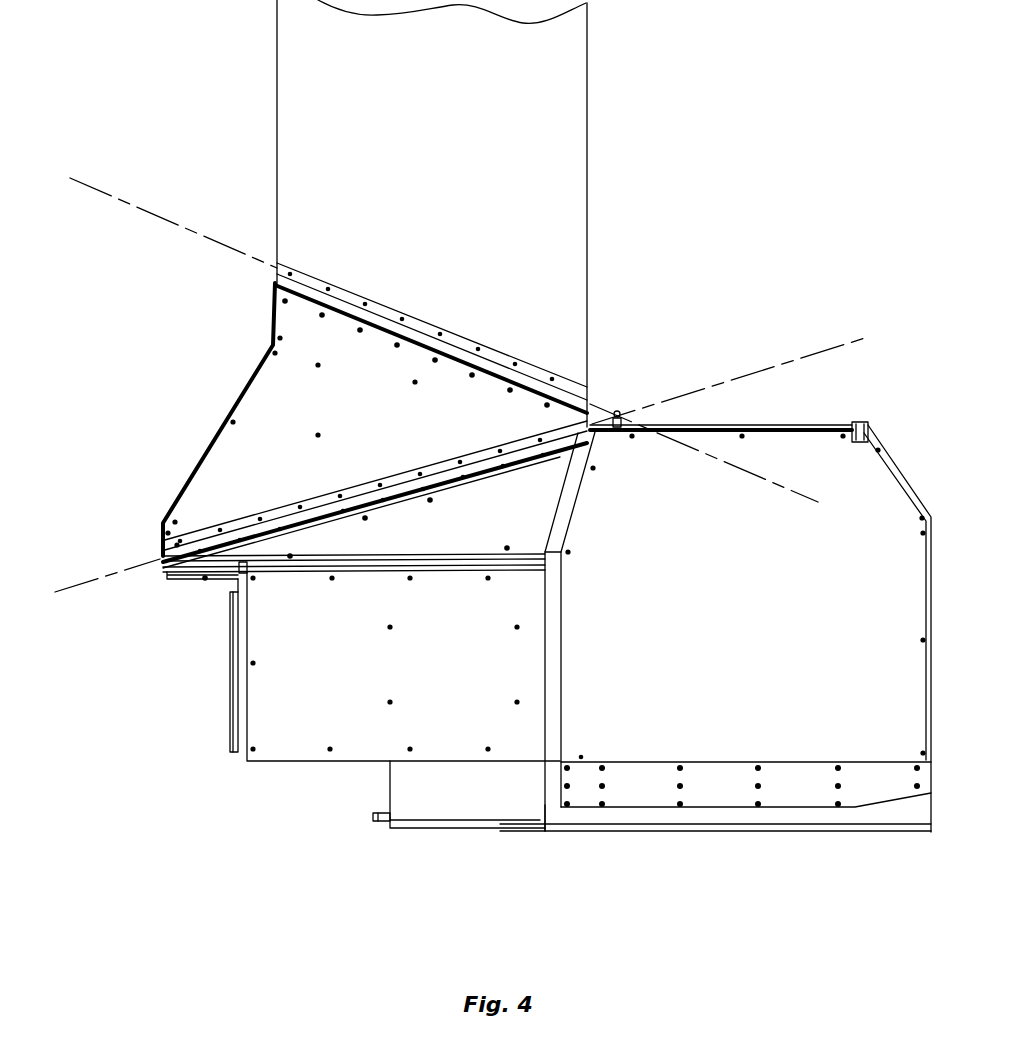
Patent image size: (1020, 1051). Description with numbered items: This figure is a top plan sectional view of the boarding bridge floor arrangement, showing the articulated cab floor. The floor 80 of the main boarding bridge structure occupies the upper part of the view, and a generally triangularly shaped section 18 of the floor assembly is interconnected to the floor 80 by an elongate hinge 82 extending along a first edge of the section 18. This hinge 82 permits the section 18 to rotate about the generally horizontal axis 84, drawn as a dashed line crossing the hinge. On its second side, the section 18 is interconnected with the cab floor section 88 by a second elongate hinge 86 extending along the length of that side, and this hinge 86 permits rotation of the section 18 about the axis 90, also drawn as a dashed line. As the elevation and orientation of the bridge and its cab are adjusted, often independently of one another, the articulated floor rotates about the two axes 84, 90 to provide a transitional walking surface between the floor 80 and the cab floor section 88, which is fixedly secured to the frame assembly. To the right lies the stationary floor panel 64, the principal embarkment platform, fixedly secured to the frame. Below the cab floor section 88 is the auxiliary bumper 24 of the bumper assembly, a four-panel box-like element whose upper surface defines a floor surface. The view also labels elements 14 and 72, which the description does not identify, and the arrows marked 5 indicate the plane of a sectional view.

The floor of the boarding bridge 80 is at (413, 109).
The elongate hinge 82 is at (414, 305).
The triangularly shaped floor section 18 is at (341, 423).
The elongate hinge 86 is at (428, 458).
The cab floor section 88 is at (457, 532).
The lower panel 14 is at (424, 680).
The bracket strip 72 is at (232, 722).
The auxiliary bumper 24 is at (441, 808).
The stationary floor panel 64 is at (732, 644).
The horizontal axis 84 is at (166, 222).
The axis 90 is at (830, 348).
The section line 5- 5 is at (617, 398).